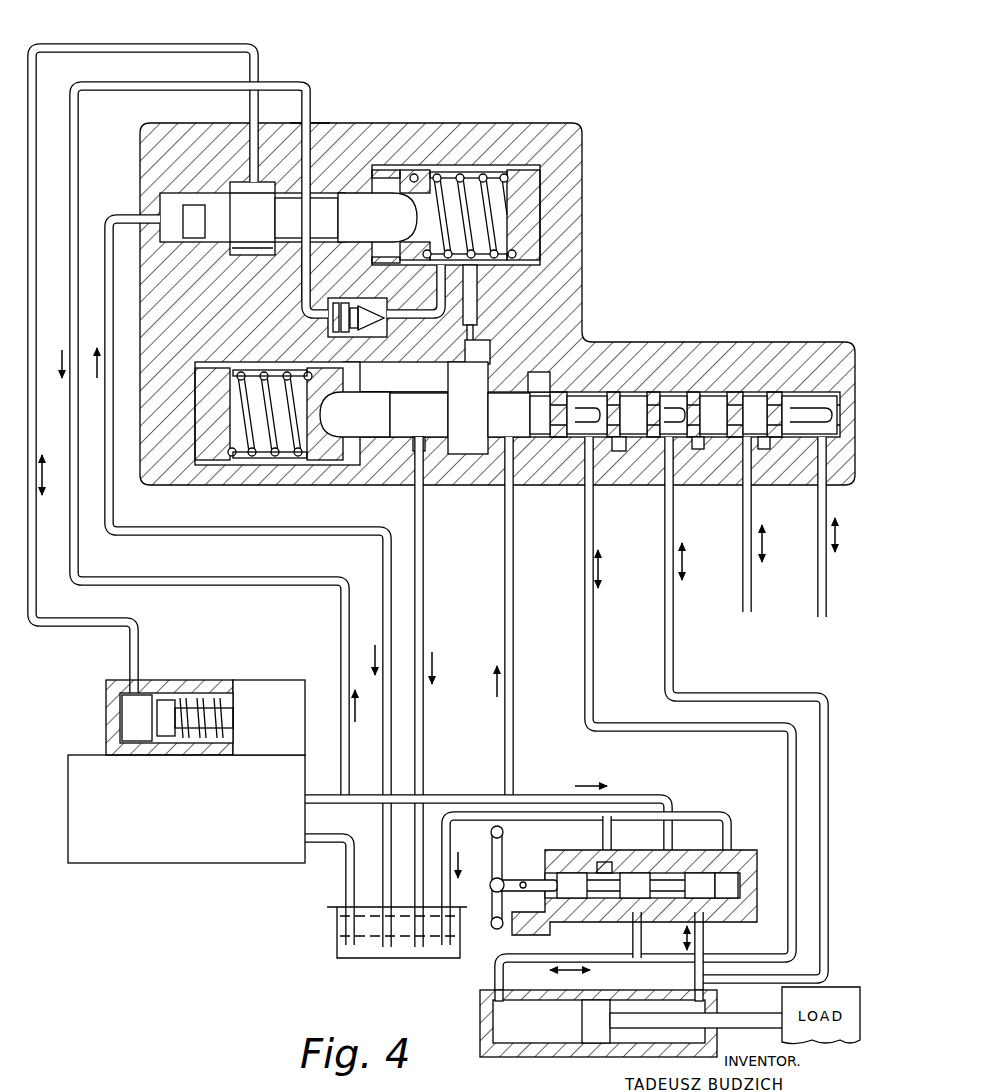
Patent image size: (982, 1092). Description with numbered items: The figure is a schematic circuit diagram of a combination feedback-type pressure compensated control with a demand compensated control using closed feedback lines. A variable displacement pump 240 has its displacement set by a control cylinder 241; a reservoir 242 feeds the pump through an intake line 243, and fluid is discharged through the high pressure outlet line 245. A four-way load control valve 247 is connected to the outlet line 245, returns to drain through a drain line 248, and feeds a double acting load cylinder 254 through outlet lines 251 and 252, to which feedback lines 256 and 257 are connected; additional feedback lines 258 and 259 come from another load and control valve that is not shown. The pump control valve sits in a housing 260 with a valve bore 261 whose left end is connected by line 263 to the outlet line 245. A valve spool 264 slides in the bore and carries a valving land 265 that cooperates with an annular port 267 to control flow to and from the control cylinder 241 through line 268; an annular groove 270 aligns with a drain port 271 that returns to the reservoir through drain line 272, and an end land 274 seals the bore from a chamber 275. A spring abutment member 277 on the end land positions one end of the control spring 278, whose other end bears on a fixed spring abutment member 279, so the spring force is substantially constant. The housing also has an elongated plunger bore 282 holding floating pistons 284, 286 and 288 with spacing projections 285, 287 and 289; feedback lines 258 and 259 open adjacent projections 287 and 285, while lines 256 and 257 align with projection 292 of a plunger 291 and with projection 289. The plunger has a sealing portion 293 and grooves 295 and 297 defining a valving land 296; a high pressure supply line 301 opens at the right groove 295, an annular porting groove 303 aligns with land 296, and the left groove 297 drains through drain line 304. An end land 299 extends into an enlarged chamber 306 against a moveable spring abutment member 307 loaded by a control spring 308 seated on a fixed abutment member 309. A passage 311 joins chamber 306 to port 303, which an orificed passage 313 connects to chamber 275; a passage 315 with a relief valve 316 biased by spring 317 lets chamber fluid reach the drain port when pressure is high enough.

The pump 240 is at (175, 858).
The control cylinder 241 is at (122, 703).
The reservoir 242 is at (366, 954).
The intake line 243 is at (350, 867).
The high pressure outlet line 245 is at (331, 800).
The load control valve 247 is at (743, 848).
The drain line 248 is at (524, 817).
The outlet line 251 is at (633, 936).
The outlet line 252 is at (703, 938).
The double acting load cylinder 254 is at (482, 1012).
The feedback line 256 is at (668, 731).
The feedback line 257 is at (729, 698).
The feedback line 258 is at (746, 596).
The feedback line 259 is at (821, 557).
The housing 260 is at (572, 298).
The valve bore 261 is at (176, 242).
The line 263 is at (227, 586).
The valve spool 264 is at (192, 205).
The valving land 265 is at (252, 218).
The annular port 267 is at (258, 255).
The line 268 is at (152, 44).
The annular groove 270 is at (316, 212).
The drain port 271 is at (326, 133).
The drain line 272 is at (79, 162).
The end land 274 is at (377, 217).
The chamber 275 is at (456, 172).
The spring abutment member 277 is at (412, 172).
The control spring 278 is at (507, 175).
The spring abutment member 279 is at (533, 209).
The plunger bore 282 is at (686, 394).
The floating piston 284 is at (774, 394).
The spacing projection 285 is at (816, 407).
The floating piston 286 is at (693, 438).
The spacing projection 287 is at (763, 438).
The floating piston 288 is at (621, 438).
The spacing projection 289 is at (661, 407).
The plunger 291 is at (533, 390).
The spacing projection 292 is at (581, 407).
The sealing portion 293 is at (538, 438).
The annular groove 295 is at (499, 435).
The valving land 296 is at (459, 403).
The annular groove 297 is at (418, 428).
The end land 299 is at (355, 414).
The high pressure supply line 301 is at (514, 623).
The annular porting groove 303 is at (443, 483).
The drain line 304 is at (425, 598).
The enlarged chamber 306 is at (238, 460).
The moveable spring abutment member 307 is at (352, 462).
The control spring 308 is at (280, 462).
The fixed abutment member 309 is at (206, 420).
The passage 311 is at (414, 364).
The orificed passage 313 is at (477, 332).
The passage 315 is at (306, 303).
The relief valve 316 is at (372, 300).
The spring 317 is at (346, 300).